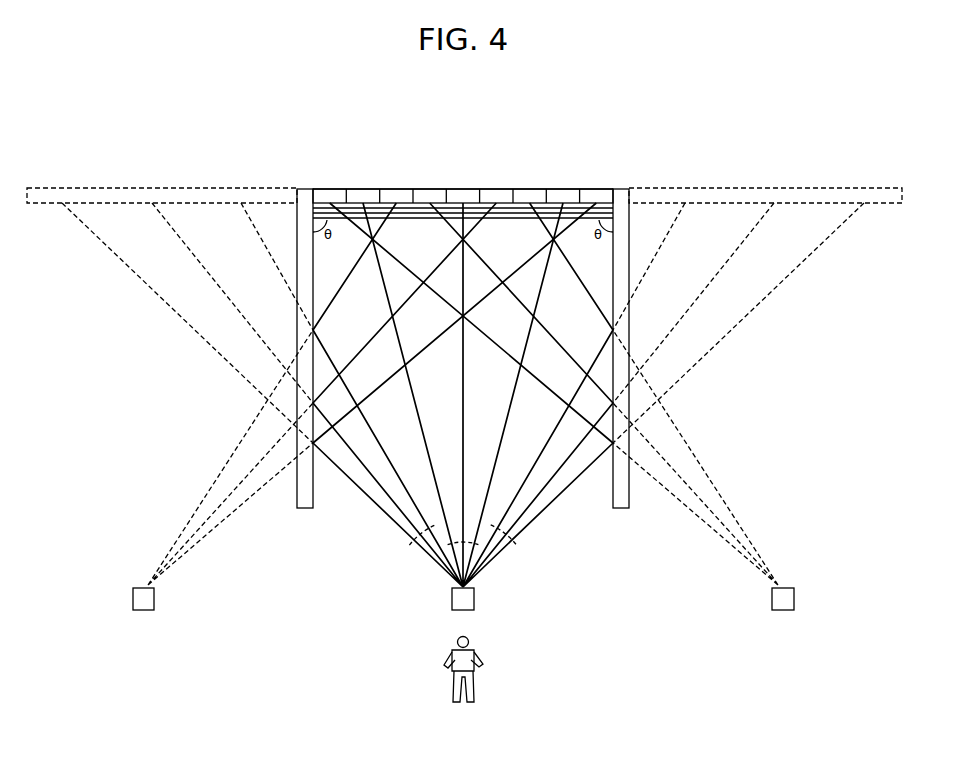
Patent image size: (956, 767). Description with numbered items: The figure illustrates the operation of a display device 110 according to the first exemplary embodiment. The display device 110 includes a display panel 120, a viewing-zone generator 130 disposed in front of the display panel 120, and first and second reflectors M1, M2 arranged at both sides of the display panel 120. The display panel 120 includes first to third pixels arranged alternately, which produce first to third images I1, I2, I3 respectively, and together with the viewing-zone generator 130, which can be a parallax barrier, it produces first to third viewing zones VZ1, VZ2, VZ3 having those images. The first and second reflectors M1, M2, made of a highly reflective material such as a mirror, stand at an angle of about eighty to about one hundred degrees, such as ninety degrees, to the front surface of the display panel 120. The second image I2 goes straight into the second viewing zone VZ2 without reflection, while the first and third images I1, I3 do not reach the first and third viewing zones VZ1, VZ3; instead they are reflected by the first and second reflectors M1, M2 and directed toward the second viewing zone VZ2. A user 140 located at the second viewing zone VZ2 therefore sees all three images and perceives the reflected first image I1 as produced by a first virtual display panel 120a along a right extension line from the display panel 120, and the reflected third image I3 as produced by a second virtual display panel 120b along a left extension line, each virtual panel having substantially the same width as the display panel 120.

The display device 110 is at (320, 156).
The display panel 120 is at (607, 190).
The first virtual display panel 120a is at (807, 188).
The second virtual display panel 120b is at (132, 188).
The viewing-zone generator 130 is at (608, 215).
The user 140 is at (481, 651).
The first reflector M1 is at (624, 508).
The second reflector M2 is at (305, 508).
The first viewing zone VZ1 is at (783, 609).
The second viewing zone VZ2 is at (463, 609).
The third viewing zone VZ3 is at (143, 609).
The first image I1 is at (513, 539).
The second image I2 is at (445, 561).
The third image I3 is at (408, 539).